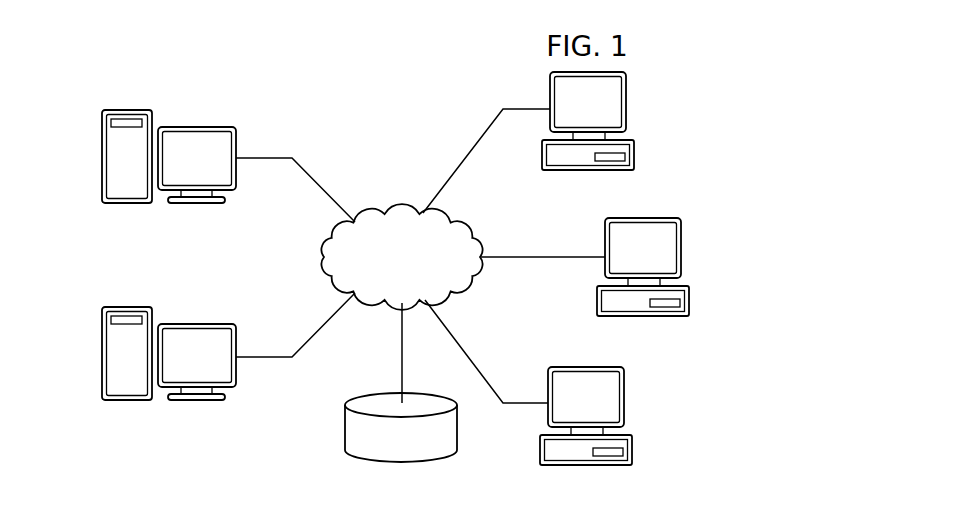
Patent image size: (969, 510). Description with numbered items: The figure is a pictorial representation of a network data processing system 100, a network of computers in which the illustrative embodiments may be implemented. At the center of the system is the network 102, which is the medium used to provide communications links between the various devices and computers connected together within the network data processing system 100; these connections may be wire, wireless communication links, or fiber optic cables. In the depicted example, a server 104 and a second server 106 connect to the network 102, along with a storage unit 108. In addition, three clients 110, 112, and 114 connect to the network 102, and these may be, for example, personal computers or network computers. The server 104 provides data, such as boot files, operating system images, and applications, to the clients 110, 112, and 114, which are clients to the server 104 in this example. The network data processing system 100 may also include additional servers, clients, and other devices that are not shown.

The network data processing system 100 is at (295, 84).
The network 102 is at (396, 209).
The server 104 is at (103, 156).
The server 106 is at (103, 351).
The storage unit 108 is at (345, 432).
The client 110 is at (634, 158).
The client 112 is at (690, 305).
The client 114 is at (633, 452).